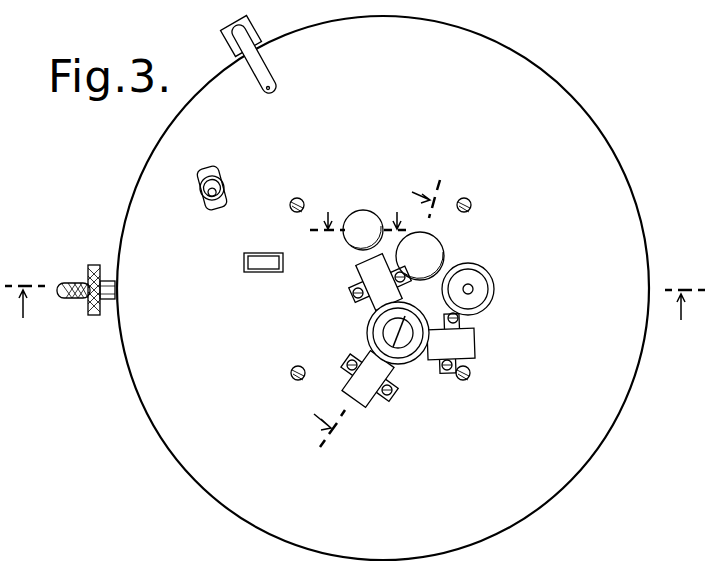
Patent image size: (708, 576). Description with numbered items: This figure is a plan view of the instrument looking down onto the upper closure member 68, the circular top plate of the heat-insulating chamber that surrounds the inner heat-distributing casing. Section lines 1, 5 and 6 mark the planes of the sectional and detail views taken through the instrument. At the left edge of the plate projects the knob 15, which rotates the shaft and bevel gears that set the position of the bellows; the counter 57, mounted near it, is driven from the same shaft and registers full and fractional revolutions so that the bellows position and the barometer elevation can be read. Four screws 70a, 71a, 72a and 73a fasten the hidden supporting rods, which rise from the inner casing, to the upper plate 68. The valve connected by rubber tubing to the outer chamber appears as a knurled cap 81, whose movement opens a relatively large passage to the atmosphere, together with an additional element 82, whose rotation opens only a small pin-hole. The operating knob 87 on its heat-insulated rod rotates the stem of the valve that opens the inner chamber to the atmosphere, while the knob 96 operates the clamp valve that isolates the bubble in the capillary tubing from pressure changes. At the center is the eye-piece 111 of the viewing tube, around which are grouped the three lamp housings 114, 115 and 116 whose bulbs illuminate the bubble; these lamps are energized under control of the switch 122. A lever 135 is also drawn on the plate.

The section line 1- 1 is at (355, 313).
The section line 5- 5 is at (370, 310).
The section line 6- 6 is at (358, 216).
The knob 15 is at (78, 282).
The counter 57 is at (256, 272).
The upper closure member 68 is at (592, 442).
The screw 70a is at (294, 198).
The screw 71a is at (472, 202).
The screw 72a is at (472, 378).
The screw 73a is at (291, 378).
The knurled cap 81 is at (478, 277).
The additional element 82 is at (474, 291).
The operating knob 87 is at (357, 211).
The knob 96 is at (437, 244).
The eye-piece 111 is at (410, 352).
The lamp housing 114 is at (365, 400).
The lamp housing 115 is at (360, 272).
The lamp housing 116 is at (472, 342).
The switch 122 is at (200, 190).
The lever 135 is at (224, 41).